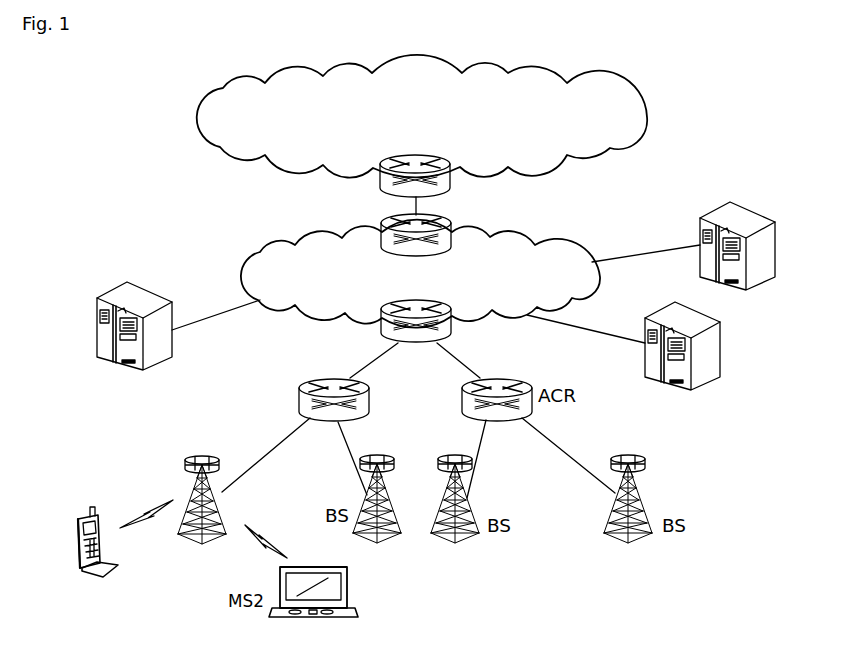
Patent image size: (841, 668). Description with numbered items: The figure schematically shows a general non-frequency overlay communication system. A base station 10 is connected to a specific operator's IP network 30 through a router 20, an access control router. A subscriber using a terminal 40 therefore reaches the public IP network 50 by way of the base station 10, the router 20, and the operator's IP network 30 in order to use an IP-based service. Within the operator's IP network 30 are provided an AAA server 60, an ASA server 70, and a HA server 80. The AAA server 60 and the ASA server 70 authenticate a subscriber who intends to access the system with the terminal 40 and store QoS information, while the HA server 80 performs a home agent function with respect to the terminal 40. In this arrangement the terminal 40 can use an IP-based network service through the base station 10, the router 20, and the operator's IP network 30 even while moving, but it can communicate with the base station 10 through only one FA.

The base station 10 is at (186, 463).
The router 20 is at (307, 383).
The operator's IP network 30 is at (567, 237).
The terminal 40 is at (79, 520).
The public IP network 50 is at (637, 93).
The AAA server 60 is at (722, 348).
The ASA server 70 is at (153, 287).
The HA server 80 is at (753, 210).